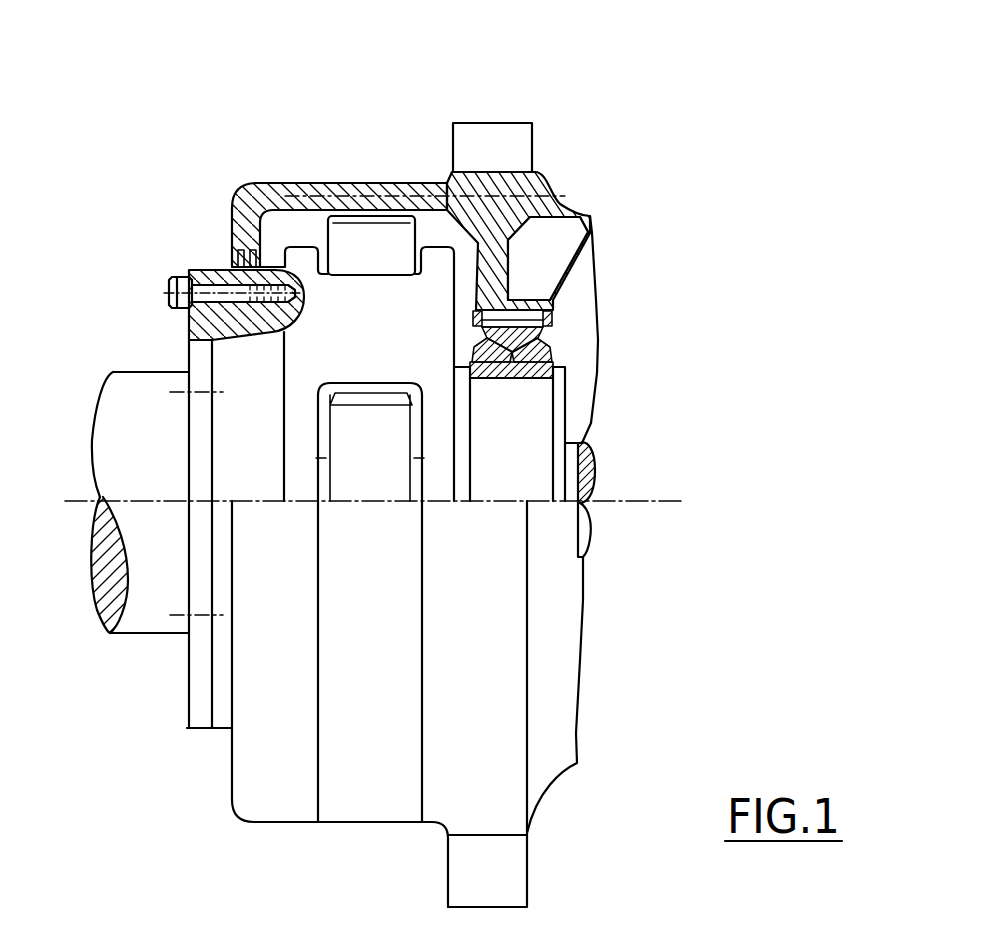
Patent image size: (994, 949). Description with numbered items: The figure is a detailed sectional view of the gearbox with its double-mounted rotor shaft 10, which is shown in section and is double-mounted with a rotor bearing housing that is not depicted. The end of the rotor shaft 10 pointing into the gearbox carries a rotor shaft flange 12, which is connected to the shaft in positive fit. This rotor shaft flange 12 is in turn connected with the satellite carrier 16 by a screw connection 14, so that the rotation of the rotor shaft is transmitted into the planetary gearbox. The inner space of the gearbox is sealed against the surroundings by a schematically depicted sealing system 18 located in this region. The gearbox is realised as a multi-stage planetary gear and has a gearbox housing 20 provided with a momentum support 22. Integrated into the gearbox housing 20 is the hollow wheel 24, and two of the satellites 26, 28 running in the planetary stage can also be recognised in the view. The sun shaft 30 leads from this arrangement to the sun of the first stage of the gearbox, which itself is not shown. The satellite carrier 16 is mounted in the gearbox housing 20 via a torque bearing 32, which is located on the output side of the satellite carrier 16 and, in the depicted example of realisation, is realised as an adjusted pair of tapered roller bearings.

The rotor shaft 10 is at (107, 632).
The rotor shaft flange 12 is at (198, 707).
The screw connection 14 is at (197, 270).
The satellite carrier 16 is at (303, 250).
The sealing system 18 is at (242, 232).
The gearbox housing 20 is at (535, 177).
The momentum support 22 is at (530, 133).
The hollow wheel 24 is at (343, 192).
The satellite 26 is at (385, 238).
The satellite 28 is at (386, 470).
The sun shaft 30 is at (582, 447).
The torque bearing 32 is at (605, 316).